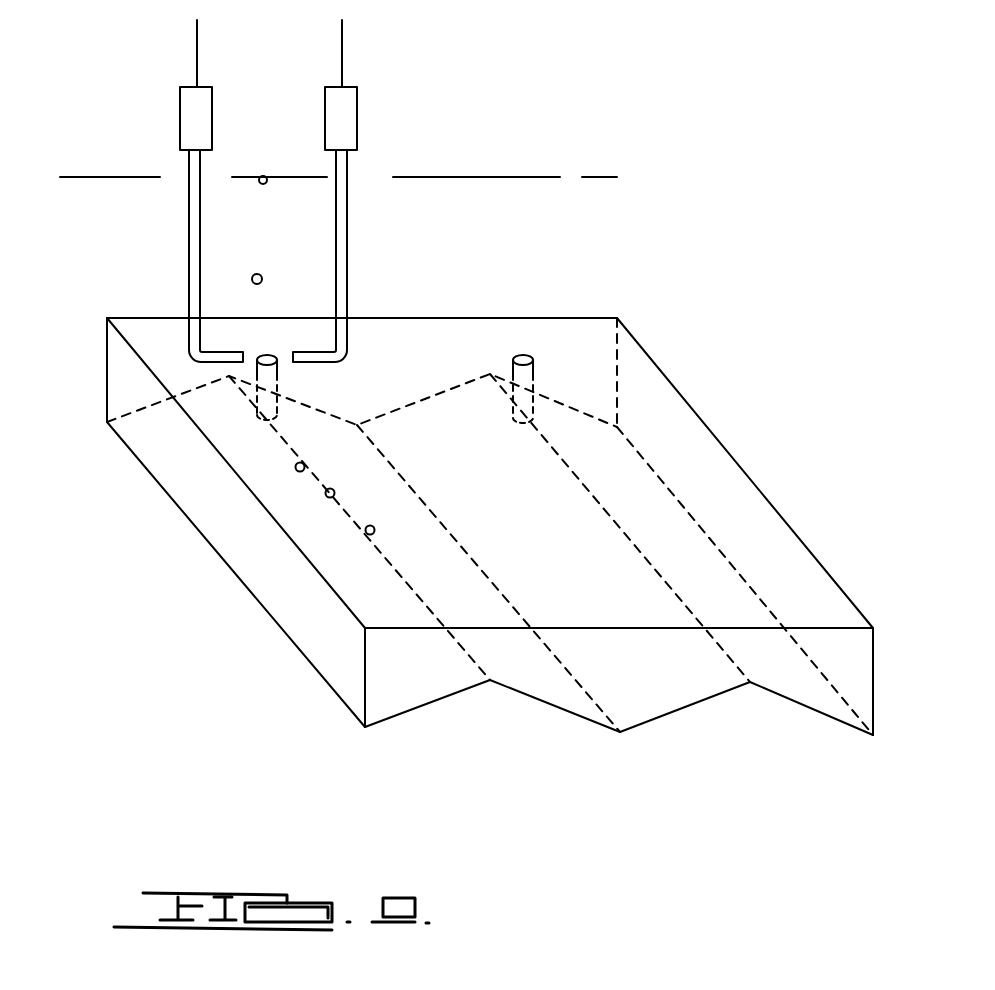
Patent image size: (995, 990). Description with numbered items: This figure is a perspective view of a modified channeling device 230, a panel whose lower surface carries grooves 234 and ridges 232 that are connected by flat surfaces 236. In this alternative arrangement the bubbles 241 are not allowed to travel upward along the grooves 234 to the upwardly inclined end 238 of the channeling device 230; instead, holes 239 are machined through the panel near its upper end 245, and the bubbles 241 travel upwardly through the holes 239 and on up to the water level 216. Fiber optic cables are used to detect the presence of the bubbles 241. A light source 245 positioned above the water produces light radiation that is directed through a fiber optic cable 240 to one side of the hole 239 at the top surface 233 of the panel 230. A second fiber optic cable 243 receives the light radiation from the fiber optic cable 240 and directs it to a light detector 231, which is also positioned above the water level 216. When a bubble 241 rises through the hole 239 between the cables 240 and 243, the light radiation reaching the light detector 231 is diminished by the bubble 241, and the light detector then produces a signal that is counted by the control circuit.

The water level 216 is at (519, 176).
The channeling device 230 is at (742, 472).
The light detector 231 is at (181, 101).
The ridges 232 is at (620, 736).
The top surface 233 is at (133, 322).
The grooves 234 is at (490, 682).
The flat surfaces 236 is at (392, 718).
The upwardly inclined end 238 is at (100, 400).
The holes 239 is at (282, 386).
The fiber optic cable 240 is at (348, 248).
The bubbles 241 is at (262, 272).
The second fiber optic cable 243 is at (189, 229).
The light source 245 is at (358, 119).